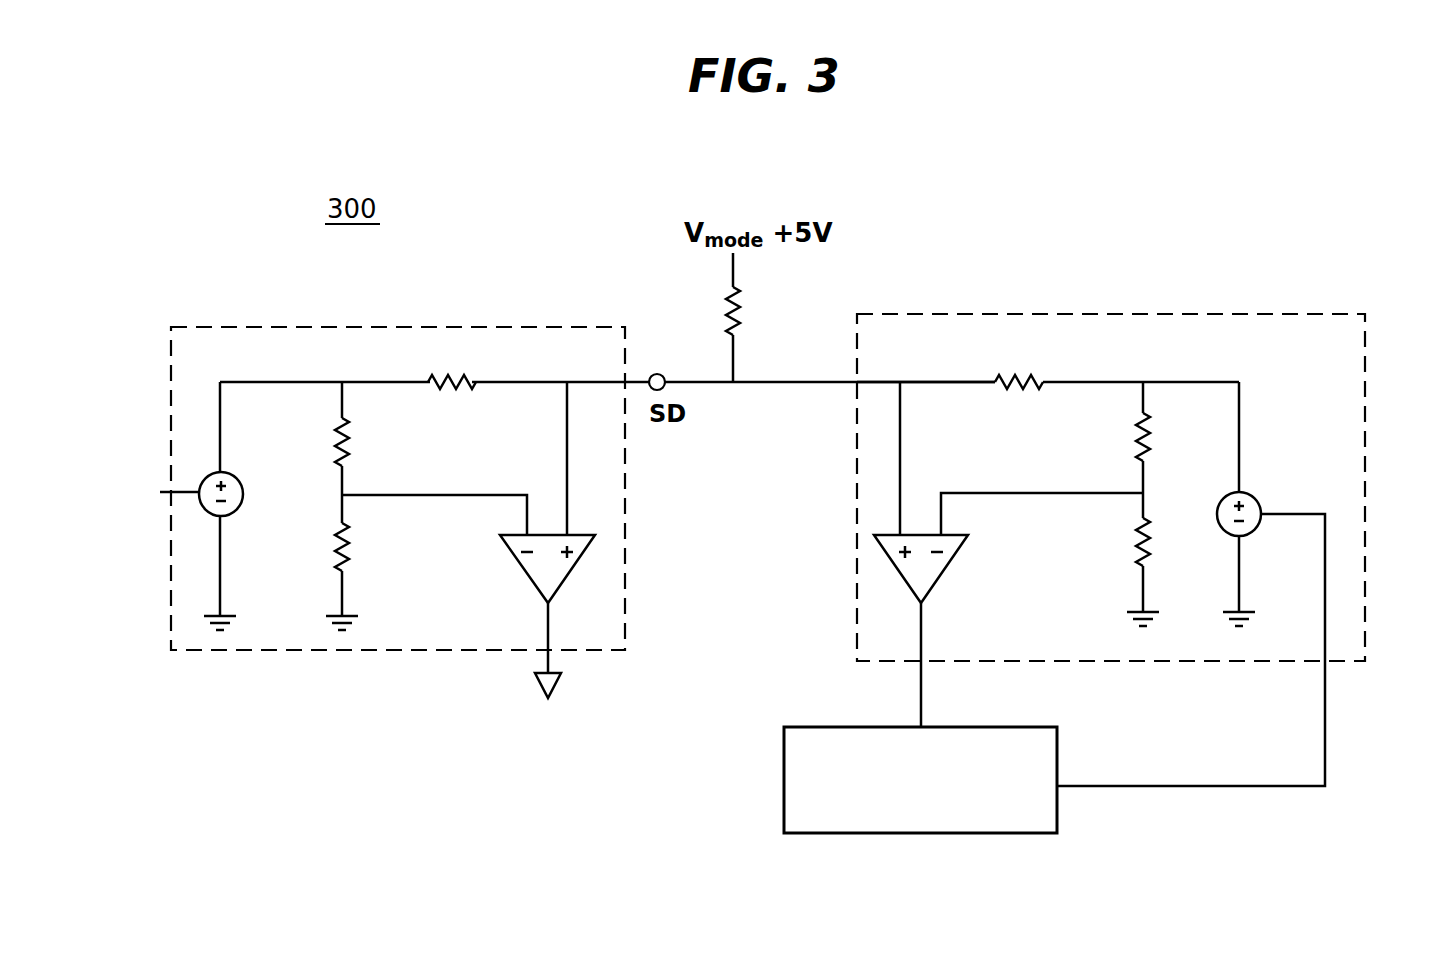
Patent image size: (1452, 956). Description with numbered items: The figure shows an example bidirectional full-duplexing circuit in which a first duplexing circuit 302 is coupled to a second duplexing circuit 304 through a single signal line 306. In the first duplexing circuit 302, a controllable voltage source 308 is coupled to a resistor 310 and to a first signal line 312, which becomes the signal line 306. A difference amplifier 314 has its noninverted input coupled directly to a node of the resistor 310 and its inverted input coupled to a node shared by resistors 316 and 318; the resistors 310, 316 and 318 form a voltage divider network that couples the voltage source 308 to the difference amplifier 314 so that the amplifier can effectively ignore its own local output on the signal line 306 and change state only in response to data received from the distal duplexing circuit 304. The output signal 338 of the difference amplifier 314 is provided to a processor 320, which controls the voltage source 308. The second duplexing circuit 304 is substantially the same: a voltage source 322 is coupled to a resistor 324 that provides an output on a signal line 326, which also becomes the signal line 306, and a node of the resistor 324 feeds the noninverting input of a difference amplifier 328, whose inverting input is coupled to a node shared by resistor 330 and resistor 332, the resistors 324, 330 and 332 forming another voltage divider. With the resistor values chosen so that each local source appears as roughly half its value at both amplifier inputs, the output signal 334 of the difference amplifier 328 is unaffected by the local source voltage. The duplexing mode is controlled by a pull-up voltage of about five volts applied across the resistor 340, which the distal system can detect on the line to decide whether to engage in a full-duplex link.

The first duplexing circuit 302 is at (1366, 372).
The second duplexing circuit 304 is at (170, 580).
The signal line 306 is at (768, 383).
The controllable voltage source 308 is at (1255, 496).
The resistor 310 is at (1028, 368).
The first signal line 312 is at (877, 380).
The difference amplifier 314 is at (945, 572).
The resistor 316 is at (1134, 440).
The resistor 318 is at (1134, 532).
The processor 320 is at (783, 777).
The voltage source 322 is at (160, 492).
The resistor 324 is at (450, 372).
The signal line 326 is at (552, 380).
The difference amplifier 328 is at (563, 584).
The resistor 330 is at (348, 450).
The resistor 332 is at (348, 556).
The output signal 334 is at (540, 630).
The output signal 338 is at (922, 698).
The resistor 340 is at (742, 312).